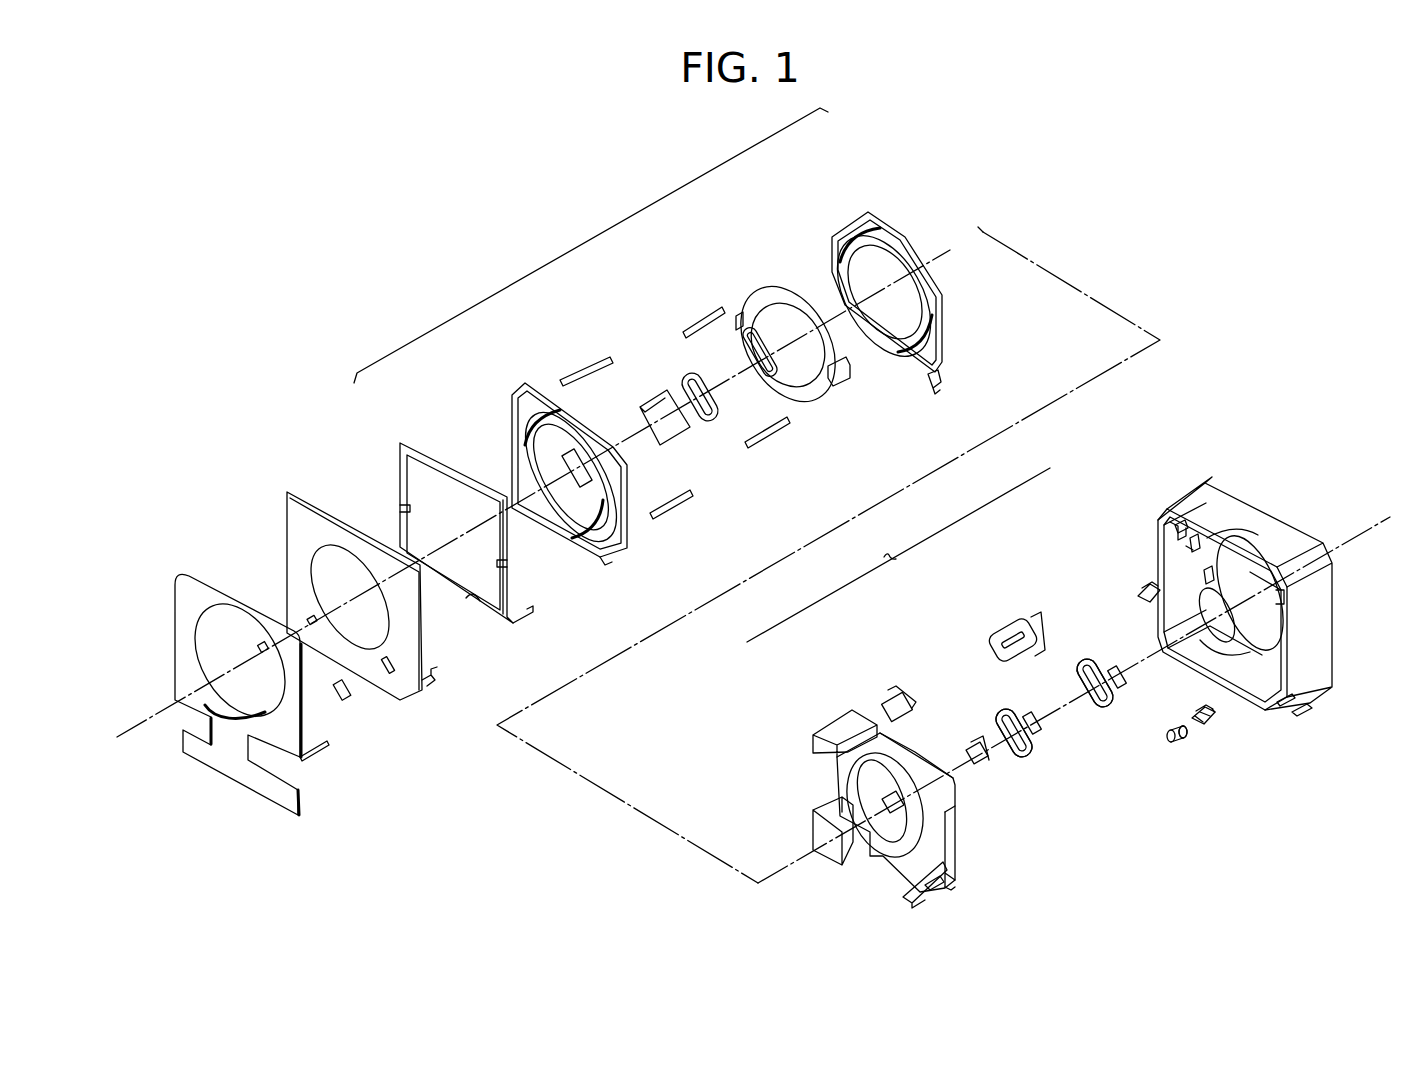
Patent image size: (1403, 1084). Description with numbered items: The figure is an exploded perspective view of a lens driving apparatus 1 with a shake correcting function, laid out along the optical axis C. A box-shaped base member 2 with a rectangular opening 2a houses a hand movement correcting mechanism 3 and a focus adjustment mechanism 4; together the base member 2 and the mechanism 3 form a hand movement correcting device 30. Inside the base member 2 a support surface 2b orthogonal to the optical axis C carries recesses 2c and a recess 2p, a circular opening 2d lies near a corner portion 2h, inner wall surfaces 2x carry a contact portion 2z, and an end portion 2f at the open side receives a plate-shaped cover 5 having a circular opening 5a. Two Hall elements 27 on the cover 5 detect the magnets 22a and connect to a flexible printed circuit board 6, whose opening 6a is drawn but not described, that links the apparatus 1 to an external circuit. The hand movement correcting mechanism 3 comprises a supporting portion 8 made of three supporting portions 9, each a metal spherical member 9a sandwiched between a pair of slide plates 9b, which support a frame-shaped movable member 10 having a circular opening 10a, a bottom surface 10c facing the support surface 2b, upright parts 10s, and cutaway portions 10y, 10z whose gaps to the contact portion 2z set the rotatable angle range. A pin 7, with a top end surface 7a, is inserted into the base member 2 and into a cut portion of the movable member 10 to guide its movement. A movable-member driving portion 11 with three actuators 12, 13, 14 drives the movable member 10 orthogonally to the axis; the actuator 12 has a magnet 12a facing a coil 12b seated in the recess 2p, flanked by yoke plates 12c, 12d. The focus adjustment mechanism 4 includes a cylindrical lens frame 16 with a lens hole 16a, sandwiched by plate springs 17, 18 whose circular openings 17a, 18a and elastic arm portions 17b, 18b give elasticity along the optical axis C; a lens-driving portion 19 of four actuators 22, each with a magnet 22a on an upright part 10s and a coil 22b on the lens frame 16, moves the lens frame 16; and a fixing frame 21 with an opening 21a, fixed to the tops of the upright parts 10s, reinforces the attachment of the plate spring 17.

The lens driving apparatus 1 is at (283, 226).
The base member 2 is at (1239, 606).
The rectangular opening 2a is at (1178, 525).
The support surface 2b is at (1270, 660).
The recesses 2c is at (1204, 572).
The circular opening 2d is at (1215, 575).
The end portion 2f is at (1286, 598).
The corner portion 2h is at (1304, 714).
The recess 2p is at (1223, 650).
The inner wall surfaces 2x is at (1178, 528).
The contact portion 2z is at (1190, 548).
The hand movement correcting mechanism 3 is at (828, 555).
The focus adjustment mechanism 4 is at (585, 247).
The cover 5 is at (331, 568).
The circular opening 5a is at (310, 610).
The flexible printed circuit board 6 is at (222, 664).
The substrate opening 6a is at (200, 672).
The pin 7 is at (1170, 730).
The top end surface 7a is at (1177, 745).
The supporting portion 8 is at (1114, 599).
The supporting portion 9 is at (1215, 708).
The spherical member 9a is at (1210, 720).
The slide plates 9b is at (1292, 790).
The movable member 10 is at (857, 793).
The circular opening 10a is at (880, 842).
The bottom surface 10c is at (955, 877).
The upright parts 10s is at (815, 835).
The cutaway portion 10y is at (880, 725).
The cutaway portion 10z is at (835, 762).
The movable-member driving portion 11 is at (946, 633).
The actuator 12 is at (997, 659).
The magnet 12a is at (905, 700).
The coil 12b is at (1008, 720).
The yoke plate 12c is at (888, 700).
The yoke plate 12d is at (1038, 645).
The actuator 13 is at (1054, 808).
The actuator 14 is at (1106, 766).
The lens frame 16 is at (784, 320).
The hole 16a is at (780, 378).
The plate spring 17 is at (579, 466).
The circular opening 17a is at (577, 510).
The arm portions 17b is at (527, 422).
The plate spring 18 is at (898, 277).
The circular opening 18a is at (932, 384).
The arm portions 18b is at (850, 258).
The lens-driving portion 19 is at (646, 321).
The fixing frame 21 is at (451, 528).
The opening 21a is at (476, 604).
The actuators 22 is at (697, 460).
The magnet 22a is at (583, 380).
The coil 22b is at (675, 425).
The Hall elements 27 is at (261, 646).
The hand movement correcting device 30 is at (1068, 667).
The optical axis C is at (142, 730).